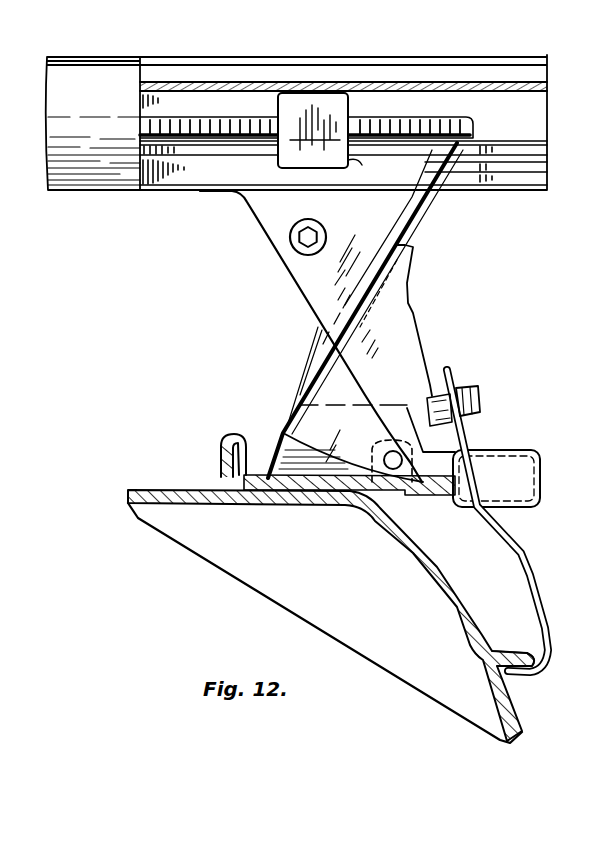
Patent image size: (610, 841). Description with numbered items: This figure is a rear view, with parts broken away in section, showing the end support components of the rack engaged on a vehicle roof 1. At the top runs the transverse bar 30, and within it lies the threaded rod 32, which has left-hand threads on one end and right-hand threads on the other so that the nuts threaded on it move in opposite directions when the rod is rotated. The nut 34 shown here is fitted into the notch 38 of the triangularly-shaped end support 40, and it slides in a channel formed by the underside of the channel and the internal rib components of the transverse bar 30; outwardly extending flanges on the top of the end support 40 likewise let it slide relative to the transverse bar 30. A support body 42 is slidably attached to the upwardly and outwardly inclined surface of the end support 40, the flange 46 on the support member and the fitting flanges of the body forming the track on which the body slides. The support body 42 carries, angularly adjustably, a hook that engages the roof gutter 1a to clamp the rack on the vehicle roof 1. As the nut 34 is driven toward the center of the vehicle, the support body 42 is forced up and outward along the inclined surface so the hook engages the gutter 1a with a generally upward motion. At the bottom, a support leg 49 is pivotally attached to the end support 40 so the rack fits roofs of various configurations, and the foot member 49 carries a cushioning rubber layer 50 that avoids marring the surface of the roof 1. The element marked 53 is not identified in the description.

The transverse bar 30 is at (537, 60).
The threaded rod 32 is at (448, 123).
The nut 34 is at (327, 100).
The notch 38 is at (350, 162).
The end support 40 is at (290, 260).
The support body 42 is at (398, 359).
The flange 46 is at (530, 565).
The support leg 49 is at (246, 466).
The cushioning rubber layer 50 is at (224, 470).
The flange edge 53 is at (436, 196).
The vehicle roof 1 is at (507, 706).
The roof gutter 1a is at (548, 650).